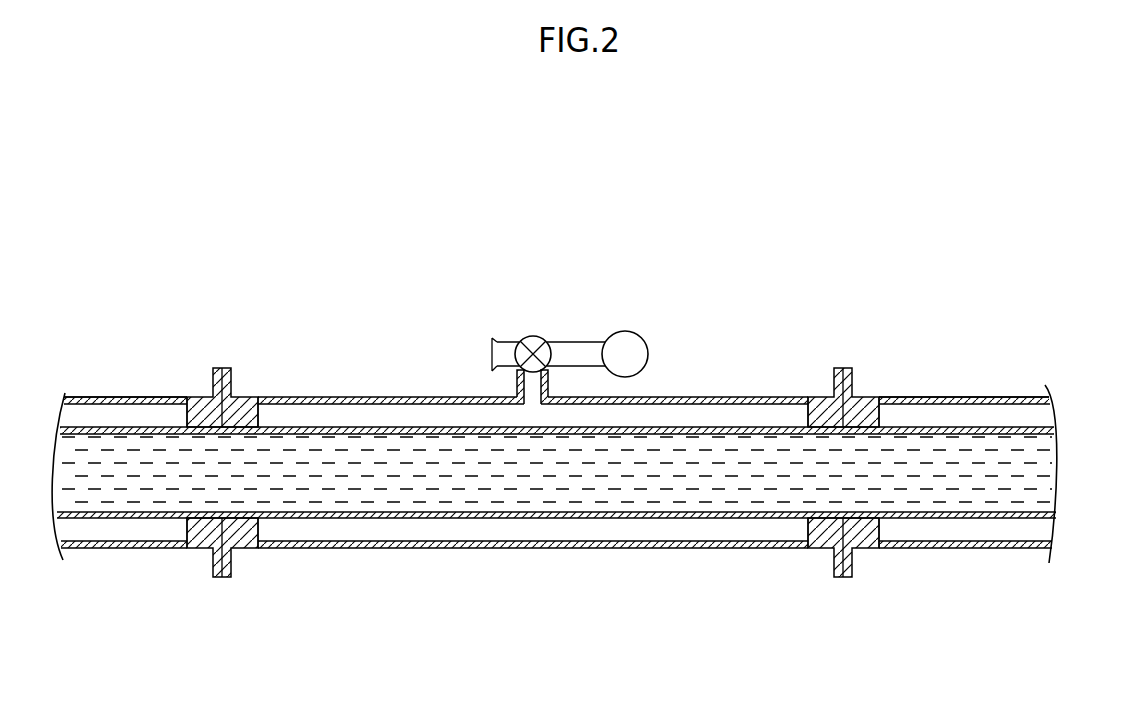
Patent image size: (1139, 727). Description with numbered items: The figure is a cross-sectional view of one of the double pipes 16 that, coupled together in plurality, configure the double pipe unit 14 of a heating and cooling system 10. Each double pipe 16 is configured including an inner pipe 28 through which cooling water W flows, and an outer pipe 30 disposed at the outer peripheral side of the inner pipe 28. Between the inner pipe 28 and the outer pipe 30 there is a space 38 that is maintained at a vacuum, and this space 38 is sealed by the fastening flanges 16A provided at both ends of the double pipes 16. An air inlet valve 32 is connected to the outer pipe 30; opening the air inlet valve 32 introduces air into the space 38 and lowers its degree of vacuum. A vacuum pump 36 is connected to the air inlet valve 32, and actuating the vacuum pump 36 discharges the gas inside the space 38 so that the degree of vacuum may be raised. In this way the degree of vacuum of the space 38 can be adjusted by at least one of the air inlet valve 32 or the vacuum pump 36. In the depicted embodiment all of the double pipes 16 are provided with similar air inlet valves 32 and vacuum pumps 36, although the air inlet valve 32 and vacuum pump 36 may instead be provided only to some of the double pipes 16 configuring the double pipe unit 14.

The heating and cooling system 10 is at (585, 379).
The double pipe unit 14 is at (425, 194).
The double pipe 16 is at (80, 397).
The fastening flange 16A is at (213, 381).
The inner pipe 28 is at (418, 430).
The outer pipe 30 is at (362, 400).
The air inlet valve 32 is at (535, 336).
The vacuum pump 36 is at (620, 331).
The space 38 is at (115, 413).
The water W is at (1032, 470).